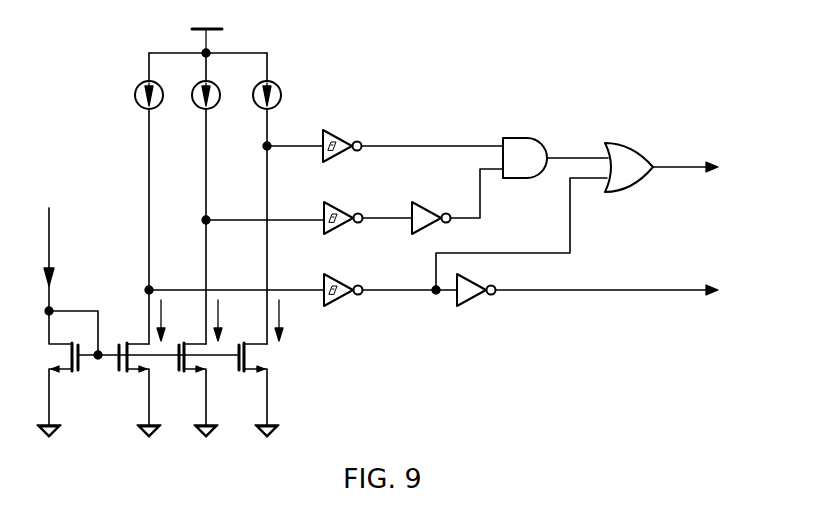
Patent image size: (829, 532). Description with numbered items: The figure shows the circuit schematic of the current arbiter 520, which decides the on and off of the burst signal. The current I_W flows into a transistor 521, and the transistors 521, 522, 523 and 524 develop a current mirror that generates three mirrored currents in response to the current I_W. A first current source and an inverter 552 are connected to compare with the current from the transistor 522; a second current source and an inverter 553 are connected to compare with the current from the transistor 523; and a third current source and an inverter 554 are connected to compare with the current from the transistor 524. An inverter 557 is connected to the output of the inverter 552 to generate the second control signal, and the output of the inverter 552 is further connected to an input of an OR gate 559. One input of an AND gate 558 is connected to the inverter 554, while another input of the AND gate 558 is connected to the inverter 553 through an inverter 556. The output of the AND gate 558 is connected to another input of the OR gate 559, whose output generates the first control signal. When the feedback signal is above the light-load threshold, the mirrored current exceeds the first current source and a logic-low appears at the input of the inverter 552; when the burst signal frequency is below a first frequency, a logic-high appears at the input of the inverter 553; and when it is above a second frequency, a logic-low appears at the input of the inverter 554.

The current arbiter 520 is at (756, 48).
The transistor 521 is at (80, 374).
The transistor 522 is at (125, 374).
The transistor 523 is at (184, 374).
The transistor 524 is at (244, 374).
The inverter 552 is at (341, 274).
The inverter 553 is at (340, 202).
The inverter 554 is at (340, 130).
The inverter 556 is at (424, 202).
The inverter 557 is at (470, 306).
The AND gate 558 is at (521, 179).
The OR gate 559 is at (632, 191).